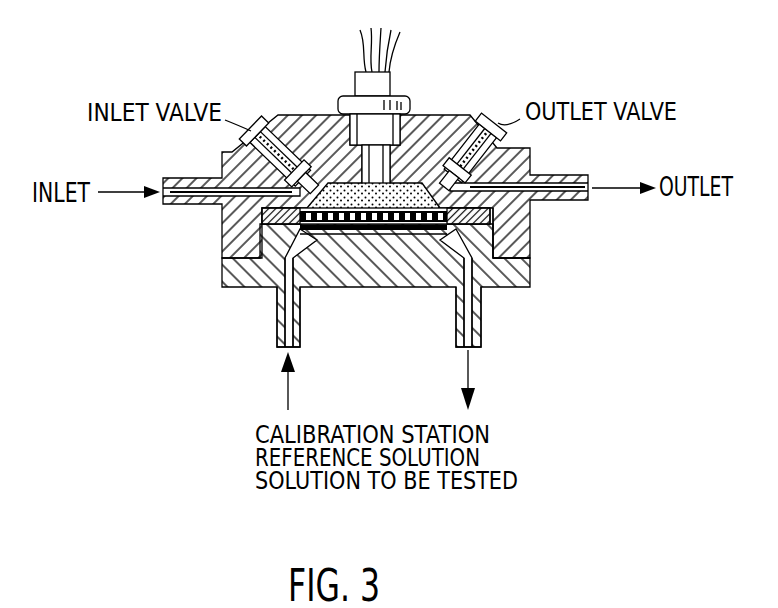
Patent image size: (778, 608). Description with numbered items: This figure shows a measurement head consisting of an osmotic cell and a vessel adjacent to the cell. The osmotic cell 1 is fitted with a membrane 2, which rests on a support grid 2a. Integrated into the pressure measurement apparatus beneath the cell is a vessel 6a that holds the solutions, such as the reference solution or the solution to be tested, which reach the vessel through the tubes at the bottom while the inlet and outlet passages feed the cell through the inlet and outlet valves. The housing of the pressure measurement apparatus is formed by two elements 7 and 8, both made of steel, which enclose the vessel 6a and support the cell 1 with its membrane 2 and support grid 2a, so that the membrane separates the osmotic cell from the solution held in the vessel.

The osmotic cell 1 is at (348, 186).
The membrane 2 is at (292, 127).
The support grid 2a is at (498, 287).
The vessel 6a is at (300, 248).
The housing element 7 is at (526, 220).
The housing element 8 is at (524, 268).